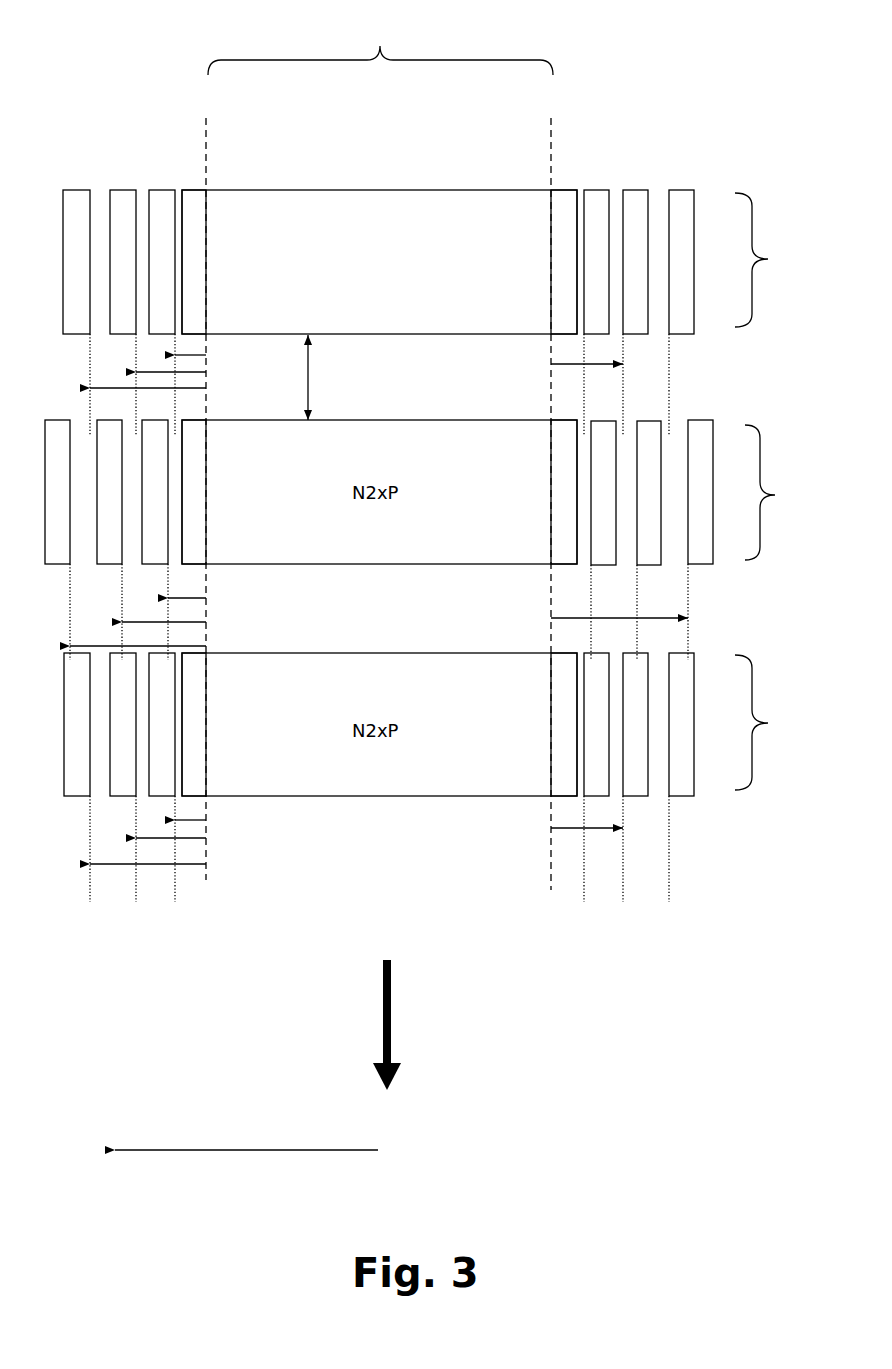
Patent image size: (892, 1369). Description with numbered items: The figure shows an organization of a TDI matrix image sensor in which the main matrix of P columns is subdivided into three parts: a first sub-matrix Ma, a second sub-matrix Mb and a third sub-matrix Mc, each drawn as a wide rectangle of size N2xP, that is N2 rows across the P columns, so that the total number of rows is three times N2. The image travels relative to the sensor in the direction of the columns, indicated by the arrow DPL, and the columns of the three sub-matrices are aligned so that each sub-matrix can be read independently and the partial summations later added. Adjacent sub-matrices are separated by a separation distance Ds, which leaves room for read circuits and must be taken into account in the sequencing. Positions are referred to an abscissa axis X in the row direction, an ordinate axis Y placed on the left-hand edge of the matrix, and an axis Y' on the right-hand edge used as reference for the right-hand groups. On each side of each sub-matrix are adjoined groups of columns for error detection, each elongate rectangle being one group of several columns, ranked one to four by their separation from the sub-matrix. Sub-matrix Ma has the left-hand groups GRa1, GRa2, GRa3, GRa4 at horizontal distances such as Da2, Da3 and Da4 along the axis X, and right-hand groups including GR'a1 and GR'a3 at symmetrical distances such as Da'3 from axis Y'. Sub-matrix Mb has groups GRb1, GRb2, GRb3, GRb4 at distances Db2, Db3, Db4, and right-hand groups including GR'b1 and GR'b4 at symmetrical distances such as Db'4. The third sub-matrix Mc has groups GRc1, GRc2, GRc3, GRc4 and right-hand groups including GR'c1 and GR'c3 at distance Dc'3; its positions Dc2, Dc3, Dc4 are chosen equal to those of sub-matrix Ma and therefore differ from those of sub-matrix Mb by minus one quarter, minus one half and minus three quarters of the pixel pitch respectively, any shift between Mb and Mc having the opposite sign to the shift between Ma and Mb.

The columns of the main matrix P is at (380, 43).
The ordinate axis Y is at (211, 492).
The axis Y' is at (537, 497).
The sub-matrix Ma is at (379, 262).
The sub-matrix Mb is at (379, 492).
The third sub-matrix Mc is at (379, 724).
The sub-matrix size of N2 rows by P columns N2xP is at (375, 270).
The number of rows per sub-matrix N2 is at (777, 491).
The group of columns GRa1 is at (194, 262).
The group of columns GRa2 is at (162, 262).
The group of columns GRa3 is at (123, 262).
The group of columns GRa4 is at (76, 262).
The group of columns GR'a1 is at (564, 262).
The group of columns GR'a3 is at (635, 262).
The group of columns GRb1 is at (194, 492).
The group of columns GRb2 is at (155, 492).
The group of columns GRb3 is at (109, 492).
The group of columns GRb4 is at (57, 492).
The group of columns GR'b1 is at (564, 492).
The group of columns GR'b4 is at (700, 492).
The group of columns GRc1 is at (194, 724).
The group of columns GRc2 is at (162, 724).
The group of columns GRc3 is at (123, 724).
The group of columns GRc4 is at (77, 724).
The group of columns GR'c1 is at (564, 724).
The group of columns GR'c3 is at (635, 724).
The horizontal distance Da2 is at (191, 346).
The horizontal distance Da3 is at (171, 363).
The horizontal distance Da4 is at (148, 380).
The horizontal distance Da'3 is at (587, 354).
The separation distance Ds is at (325, 377).
The horizontal distance Db2 is at (187, 589).
The horizontal distance Db3 is at (164, 613).
The horizontal distance Db4 is at (138, 636).
The horizontal distance Db'4 is at (619, 634).
The position Dc2 is at (190, 810).
The position Dc3 is at (171, 827).
The position Dc4 is at (148, 853).
The horizontal distance Dc'3 is at (587, 817).
The direction of relative movement DPL is at (354, 1025).
The abscissa axis X is at (246, 1136).